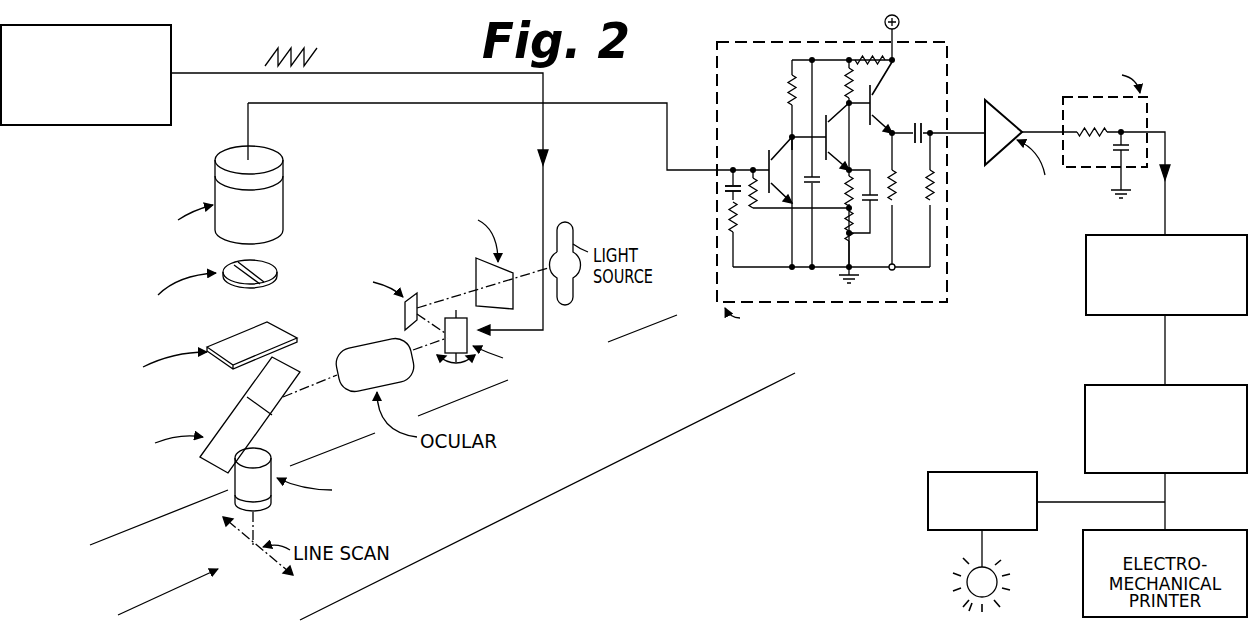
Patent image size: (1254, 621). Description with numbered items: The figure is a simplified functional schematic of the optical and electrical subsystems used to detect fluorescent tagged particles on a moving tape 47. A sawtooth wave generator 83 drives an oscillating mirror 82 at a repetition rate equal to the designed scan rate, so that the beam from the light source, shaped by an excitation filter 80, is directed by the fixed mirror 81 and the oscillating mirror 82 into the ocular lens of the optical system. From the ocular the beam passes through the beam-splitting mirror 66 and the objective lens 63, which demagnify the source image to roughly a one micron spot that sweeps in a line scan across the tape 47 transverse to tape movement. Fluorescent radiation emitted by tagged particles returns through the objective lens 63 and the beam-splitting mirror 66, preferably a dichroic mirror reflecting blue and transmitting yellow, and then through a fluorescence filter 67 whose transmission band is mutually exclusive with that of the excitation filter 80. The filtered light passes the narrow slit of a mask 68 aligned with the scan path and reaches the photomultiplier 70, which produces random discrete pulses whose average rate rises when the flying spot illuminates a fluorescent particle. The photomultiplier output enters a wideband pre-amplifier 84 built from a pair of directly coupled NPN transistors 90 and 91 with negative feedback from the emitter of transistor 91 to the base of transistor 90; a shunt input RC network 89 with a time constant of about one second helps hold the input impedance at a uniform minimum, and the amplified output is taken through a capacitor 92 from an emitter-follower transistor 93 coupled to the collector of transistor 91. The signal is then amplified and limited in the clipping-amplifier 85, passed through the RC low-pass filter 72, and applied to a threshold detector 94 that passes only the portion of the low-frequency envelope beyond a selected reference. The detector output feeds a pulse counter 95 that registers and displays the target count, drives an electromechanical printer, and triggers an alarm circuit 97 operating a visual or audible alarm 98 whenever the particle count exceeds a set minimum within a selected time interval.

The sawtooth wave generator 83 is at (172, 40).
The photomultiplier 70 is at (285, 185).
The mask 68 is at (226, 261).
The fluorescence filter 67 is at (222, 338).
The beam-splitting mirror 66 is at (232, 410).
The objective lens 63 is at (275, 500).
The tape 47 is at (551, 497).
The fixed mirror 81 is at (403, 318).
The excitation filter 80 is at (475, 268).
The oscillating mirror 82 is at (472, 333).
The pre-amplifier 84 is at (854, 173).
The clipping-amplifier 85 is at (995, 105).
The RC low-pass filter 72 is at (1147, 105).
The shunt input RC network 89 is at (739, 193).
The first NPN transistor 90 is at (769, 155).
The second NPN transistor 91 is at (828, 137).
The capacitor 92 is at (906, 120).
The emitter-follower transistor 93 is at (872, 100).
The threshold detector 94 is at (1085, 243).
The pulse counter 95 is at (1085, 392).
The alarm circuit 97 is at (948, 472).
The alarm 98 is at (962, 575).